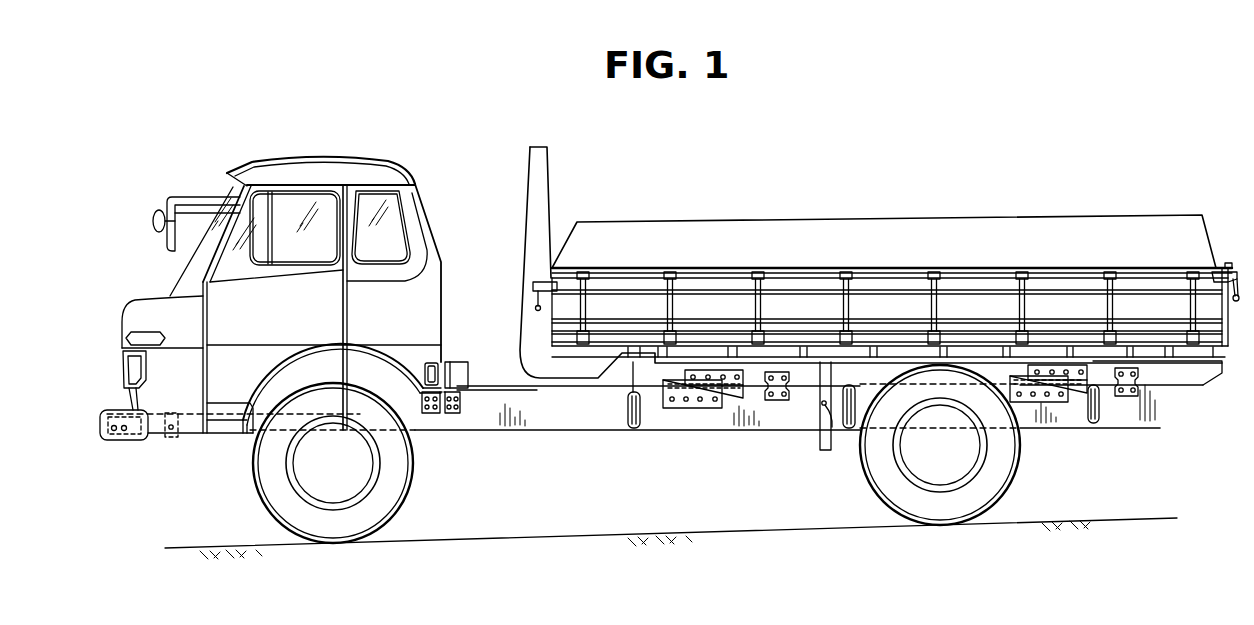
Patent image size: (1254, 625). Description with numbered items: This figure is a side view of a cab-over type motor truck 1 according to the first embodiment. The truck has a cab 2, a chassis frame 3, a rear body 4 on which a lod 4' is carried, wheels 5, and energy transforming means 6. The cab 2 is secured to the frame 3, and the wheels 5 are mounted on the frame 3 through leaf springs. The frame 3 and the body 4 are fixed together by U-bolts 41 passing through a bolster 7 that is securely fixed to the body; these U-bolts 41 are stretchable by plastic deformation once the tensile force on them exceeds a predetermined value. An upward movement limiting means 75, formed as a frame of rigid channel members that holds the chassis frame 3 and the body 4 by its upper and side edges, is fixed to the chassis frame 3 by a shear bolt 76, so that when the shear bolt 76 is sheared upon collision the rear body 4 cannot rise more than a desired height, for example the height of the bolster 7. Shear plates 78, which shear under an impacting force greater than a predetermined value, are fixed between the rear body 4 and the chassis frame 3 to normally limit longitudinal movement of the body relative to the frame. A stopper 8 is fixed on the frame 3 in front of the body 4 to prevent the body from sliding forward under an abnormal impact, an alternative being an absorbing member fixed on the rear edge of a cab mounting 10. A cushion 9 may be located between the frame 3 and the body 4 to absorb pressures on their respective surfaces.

The motor truck 1 is at (434, 209).
The cab 2 is at (326, 158).
The chassis frame 3 is at (555, 416).
The rear body 4 is at (879, 262).
The lod 4' is at (884, 212).
The wheels 5 is at (1017, 470).
The energy transforming means 6 is at (703, 410).
The bolster 7 is at (1177, 372).
The stopper 8 is at (455, 362).
The cushion 9 is at (492, 386).
The cab mounting 10 is at (423, 405).
The U-bolts 41 is at (628, 408).
The upward movement limiting means 75 is at (818, 447).
The shear bolt 76 is at (832, 427).
The shear plates 78 is at (778, 402).